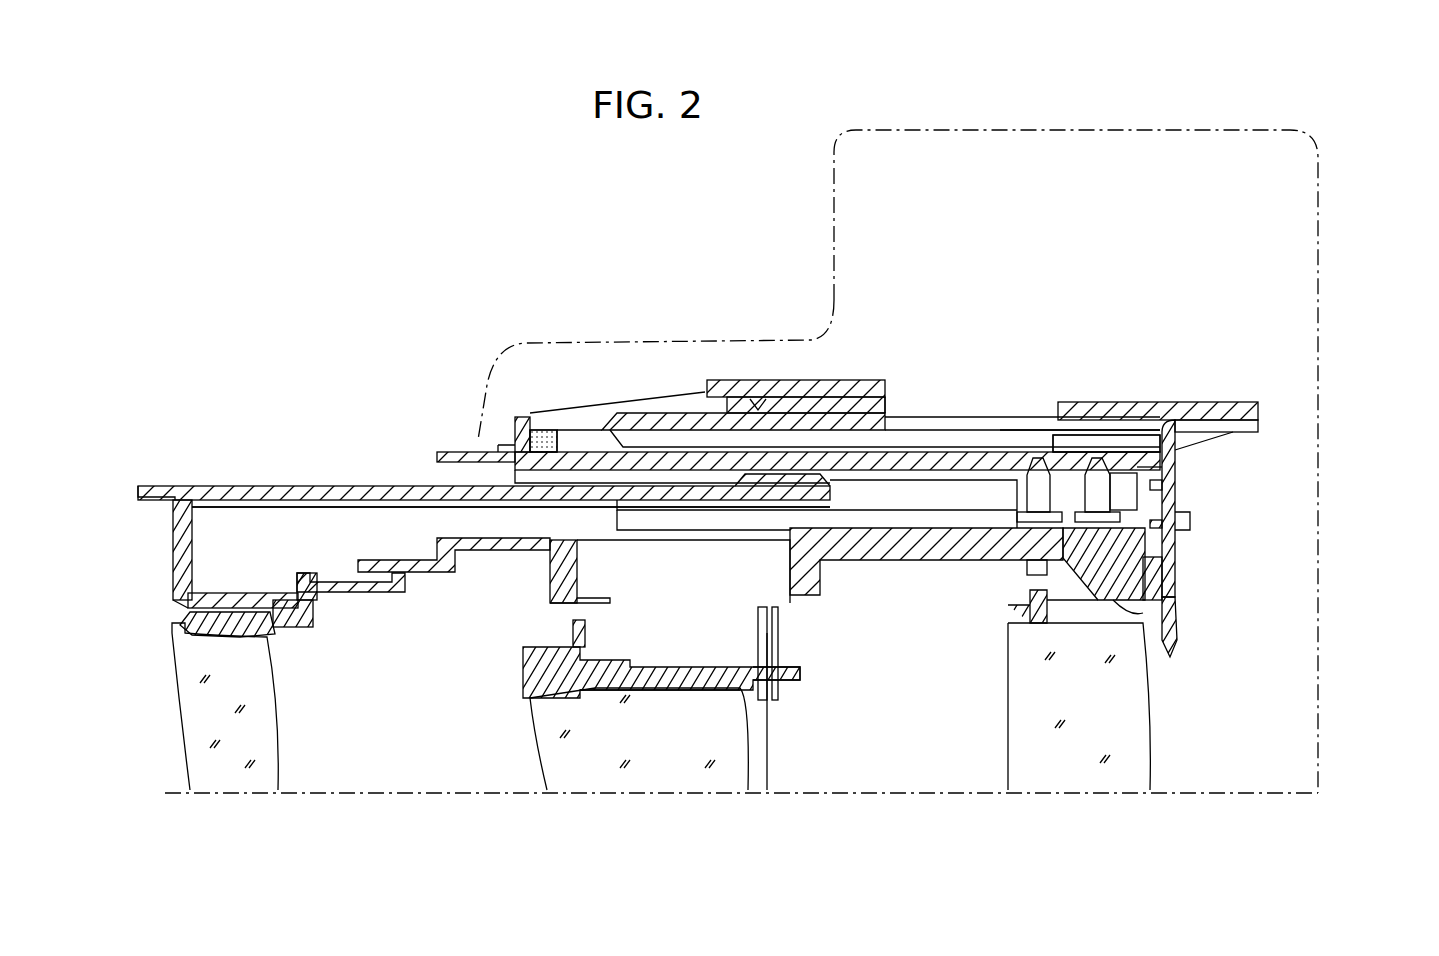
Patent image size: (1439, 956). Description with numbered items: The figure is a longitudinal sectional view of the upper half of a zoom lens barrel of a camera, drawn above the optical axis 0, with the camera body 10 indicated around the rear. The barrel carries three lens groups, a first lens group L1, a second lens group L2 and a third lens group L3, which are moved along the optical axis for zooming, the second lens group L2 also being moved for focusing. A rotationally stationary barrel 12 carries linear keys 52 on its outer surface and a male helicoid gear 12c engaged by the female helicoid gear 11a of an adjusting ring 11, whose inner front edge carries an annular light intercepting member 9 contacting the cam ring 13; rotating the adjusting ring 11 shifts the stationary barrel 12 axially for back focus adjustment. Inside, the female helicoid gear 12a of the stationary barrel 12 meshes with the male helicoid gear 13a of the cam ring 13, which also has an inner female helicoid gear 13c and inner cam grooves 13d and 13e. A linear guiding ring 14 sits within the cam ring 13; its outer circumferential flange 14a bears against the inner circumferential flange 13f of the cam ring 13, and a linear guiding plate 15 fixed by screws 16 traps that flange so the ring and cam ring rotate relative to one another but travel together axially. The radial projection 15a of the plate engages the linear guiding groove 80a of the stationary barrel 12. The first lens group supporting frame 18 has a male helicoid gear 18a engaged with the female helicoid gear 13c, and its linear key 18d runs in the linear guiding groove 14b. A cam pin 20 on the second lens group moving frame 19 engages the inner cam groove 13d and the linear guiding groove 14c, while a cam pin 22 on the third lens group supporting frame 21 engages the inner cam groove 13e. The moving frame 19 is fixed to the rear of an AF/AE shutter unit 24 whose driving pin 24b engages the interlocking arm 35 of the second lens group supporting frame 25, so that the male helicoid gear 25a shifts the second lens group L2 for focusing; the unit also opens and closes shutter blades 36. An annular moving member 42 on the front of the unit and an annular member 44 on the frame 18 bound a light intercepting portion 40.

The camera body 10 is at (830, 200).
The annular light intercepting member 9 is at (547, 440).
The adjusting ring 11 is at (713, 395).
The female helicoid gear 11a is at (757, 408).
The stationary barrel 12 is at (683, 412).
The female helicoid gear 12a is at (903, 440).
The male helicoid gear 12c is at (855, 398).
The cam ring 13 is at (590, 448).
The male helicoid gear 13a is at (1087, 450).
The female helicoid gear 13c is at (573, 478).
The inner cam groove 13d is at (1050, 455).
The inner cam groove 13e is at (1097, 460).
The inner circumferential flange 13f is at (1175, 485).
The linear guiding ring 14 is at (1177, 580).
The outer circumferential flange 14a is at (1165, 470).
The linear guiding groove 14b is at (940, 505).
The linear guiding groove 14c is at (1000, 505).
The linear guiding plate 15 is at (1177, 553).
The radial projection 15a is at (1177, 423).
The screw 16 is at (1187, 527).
The first lens group supporting frame 18 is at (394, 495).
The male helicoid gear 18a is at (835, 383).
The linear key 18d is at (338, 507).
The second lens group moving frame 19 is at (888, 553).
The cam pin 20 is at (1030, 493).
The third lens group supporting frame 21 is at (1145, 613).
The cam pin 22 is at (1107, 490).
The AF/AE shutter unit 24 is at (745, 623).
The driving pin 24b is at (607, 603).
The second lens group supporting frame 25 is at (745, 692).
The male helicoid gear 25a is at (703, 667).
The interlocking arm 35 is at (583, 640).
The shutter blades 36 is at (767, 672).
The light intercepting portion 40 is at (369, 548).
The annular moving member 42 is at (550, 540).
The annular member 44 is at (263, 603).
The linear key 52 is at (1075, 440).
The linear guiding groove 80a is at (1233, 420).
The first lens group L1 is at (270, 747).
The second lens group L2 is at (552, 732).
The third lens group L3 is at (1020, 775).
The optical axis 0 is at (852, 790).